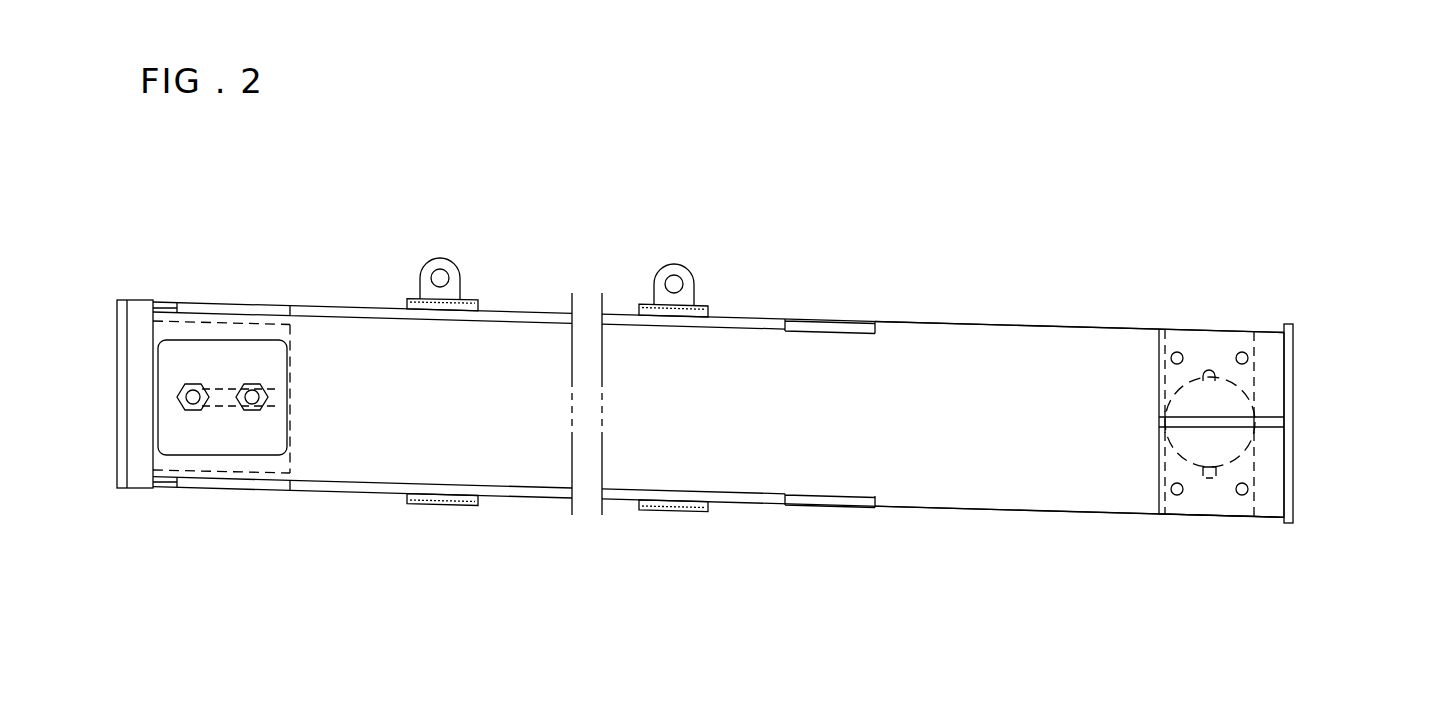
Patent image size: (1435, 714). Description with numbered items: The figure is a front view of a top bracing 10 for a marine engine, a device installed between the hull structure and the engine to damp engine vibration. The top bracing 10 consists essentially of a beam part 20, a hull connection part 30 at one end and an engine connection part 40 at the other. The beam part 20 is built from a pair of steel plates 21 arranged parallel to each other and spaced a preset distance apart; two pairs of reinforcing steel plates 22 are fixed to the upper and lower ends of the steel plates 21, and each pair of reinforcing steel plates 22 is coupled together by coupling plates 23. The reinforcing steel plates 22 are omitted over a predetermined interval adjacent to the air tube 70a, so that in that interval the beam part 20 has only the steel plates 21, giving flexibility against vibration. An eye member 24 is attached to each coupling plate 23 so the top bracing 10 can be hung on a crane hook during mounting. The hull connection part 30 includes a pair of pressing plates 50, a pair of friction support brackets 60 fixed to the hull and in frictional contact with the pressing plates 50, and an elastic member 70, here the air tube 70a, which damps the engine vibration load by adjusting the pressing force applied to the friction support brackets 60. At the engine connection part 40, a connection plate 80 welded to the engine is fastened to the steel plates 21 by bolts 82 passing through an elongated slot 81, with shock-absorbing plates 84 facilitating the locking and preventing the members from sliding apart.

The top bracing 10 is at (900, 266).
The beam part 20 is at (528, 503).
The steel plates 21 is at (1000, 336).
The reinforcing steel plates 22 is at (340, 306).
The coupling plates 23 is at (478, 301).
The eye member 24 is at (447, 259).
The hull connection part 30 is at (1192, 320).
The engine connection part 40 is at (202, 500).
The pressing plates 50 is at (1256, 350).
The friction support brackets 60 is at (1206, 514).
The elastic member 70 is at (1247, 392).
The air tube 70a is at (1209, 424).
The connection plate 80 is at (139, 301).
The slot 81 is at (229, 386).
The bolts 82 is at (194, 386).
The shock-absorbing plates 84 is at (246, 456).